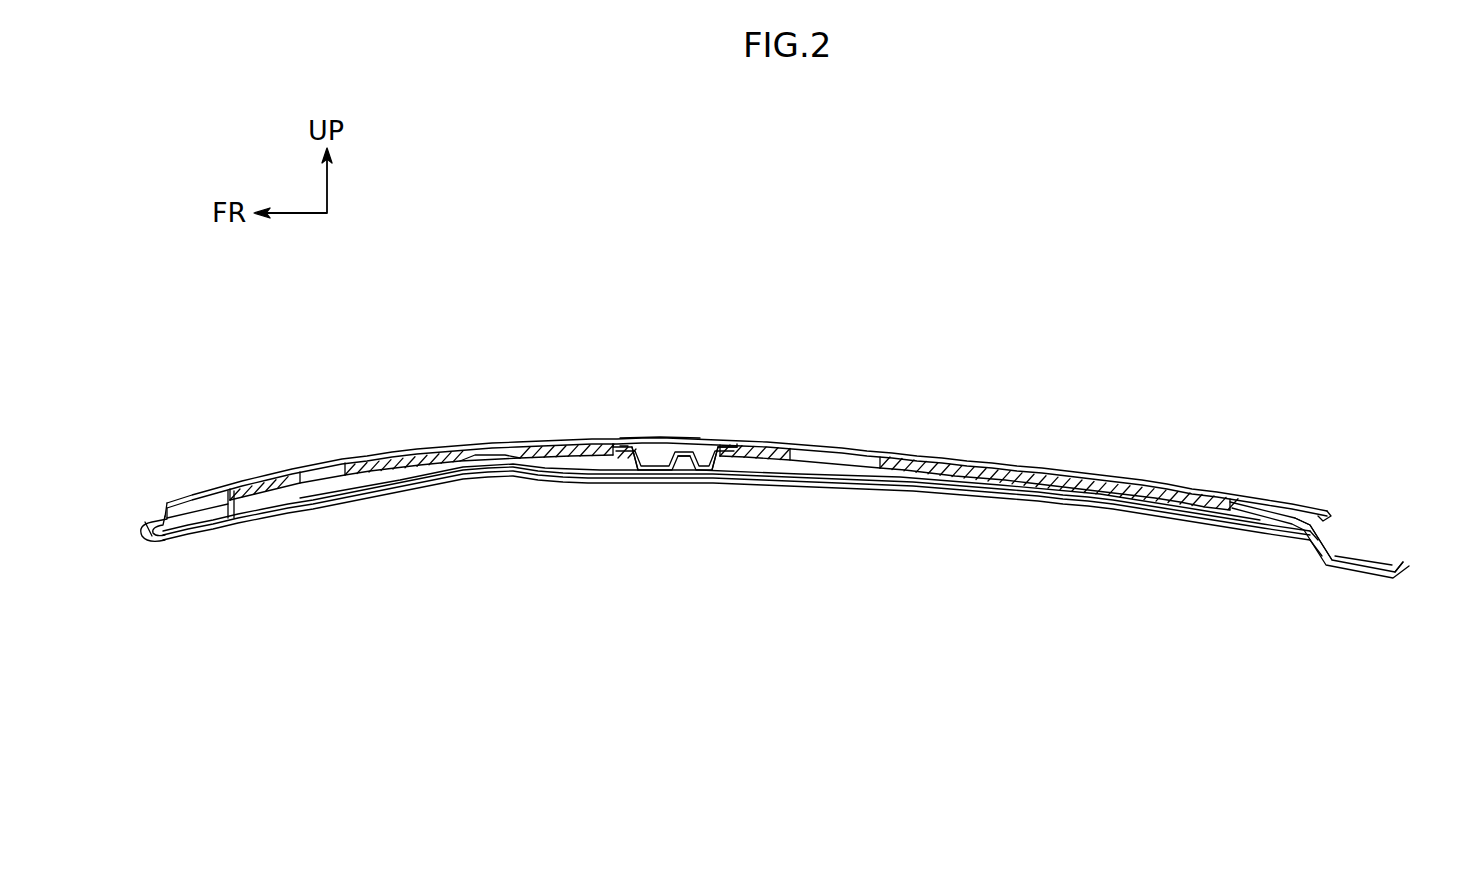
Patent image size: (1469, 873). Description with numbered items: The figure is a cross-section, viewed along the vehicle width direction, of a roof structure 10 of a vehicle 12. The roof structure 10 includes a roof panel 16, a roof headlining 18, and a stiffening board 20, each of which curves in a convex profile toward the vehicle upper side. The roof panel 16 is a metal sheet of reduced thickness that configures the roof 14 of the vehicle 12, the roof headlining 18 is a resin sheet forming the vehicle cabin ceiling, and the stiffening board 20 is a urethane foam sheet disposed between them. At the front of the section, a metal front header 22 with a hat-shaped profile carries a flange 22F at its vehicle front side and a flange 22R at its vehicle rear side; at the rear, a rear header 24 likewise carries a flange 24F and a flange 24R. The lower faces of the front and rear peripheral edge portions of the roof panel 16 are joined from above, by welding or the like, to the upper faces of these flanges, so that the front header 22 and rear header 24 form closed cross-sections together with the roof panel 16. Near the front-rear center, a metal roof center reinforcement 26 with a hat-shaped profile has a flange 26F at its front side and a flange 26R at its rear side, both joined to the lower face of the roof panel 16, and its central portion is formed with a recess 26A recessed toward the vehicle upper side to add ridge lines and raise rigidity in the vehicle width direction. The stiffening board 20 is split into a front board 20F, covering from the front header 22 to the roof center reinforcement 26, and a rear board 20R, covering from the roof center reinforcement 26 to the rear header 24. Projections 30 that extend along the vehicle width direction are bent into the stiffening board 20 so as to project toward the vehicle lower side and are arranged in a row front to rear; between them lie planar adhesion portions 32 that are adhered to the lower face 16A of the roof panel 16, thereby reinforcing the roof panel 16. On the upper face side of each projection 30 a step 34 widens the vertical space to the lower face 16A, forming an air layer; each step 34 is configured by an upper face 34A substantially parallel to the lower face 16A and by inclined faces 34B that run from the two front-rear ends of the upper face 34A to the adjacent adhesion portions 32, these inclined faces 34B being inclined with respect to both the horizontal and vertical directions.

The roof structure 10 is at (410, 452).
The vehicle 12 is at (1020, 426).
The roof 14 is at (657, 441).
The roof panel 16 is at (918, 458).
The lower face of roof panel 16A is at (500, 448).
The roof headlining 18 is at (400, 488).
The stiffening board 20 is at (696, 504).
The front board 20F is at (618, 472).
The rear board 20R is at (742, 472).
The front header 22 is at (195, 546).
The flange at vehicle front side of front header 22F is at (160, 540).
The flange at vehicle rear side of front header 22R is at (233, 520).
The rear header 24 is at (1350, 578).
The flange at vehicle front side of rear header 24F is at (1297, 524).
The flange at vehicle rear side of rear header 24R is at (1390, 578).
The roof center reinforcement 26 is at (707, 454).
The recess 26A is at (686, 472).
The flange at vehicle front side of roof center reinforcement 26F is at (625, 445).
The flange at vehicle rear side of roof center reinforcement 26R is at (738, 453).
The projections 30 is at (312, 492).
The adhesion portions 32 is at (357, 458).
The steps 34 is at (312, 467).
The upper face of step 34A is at (833, 465).
The inclined faces 34B is at (305, 466).